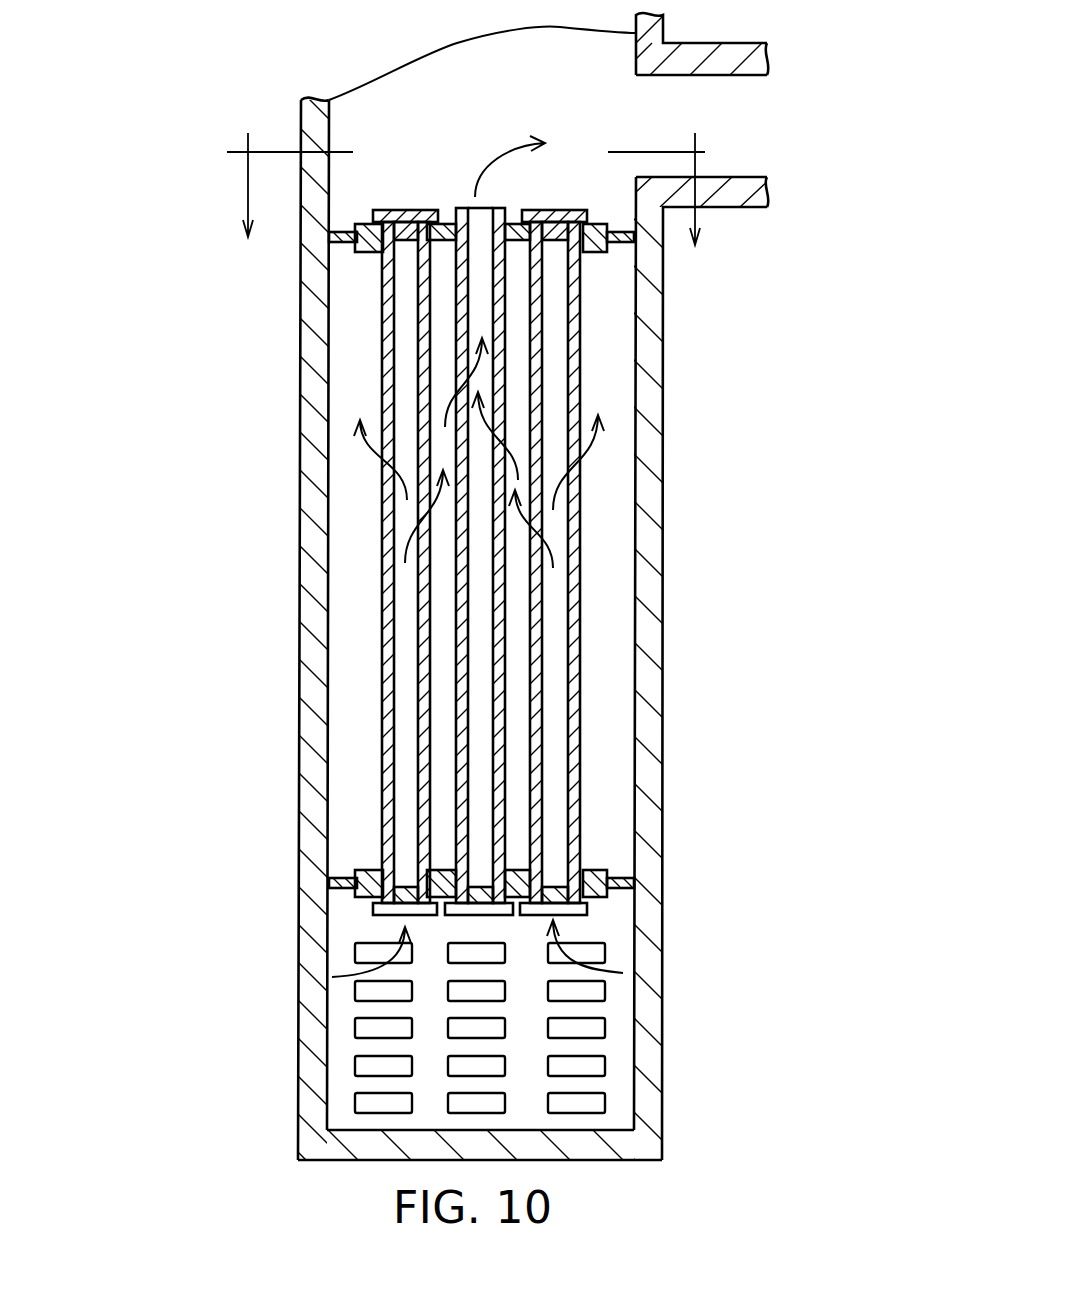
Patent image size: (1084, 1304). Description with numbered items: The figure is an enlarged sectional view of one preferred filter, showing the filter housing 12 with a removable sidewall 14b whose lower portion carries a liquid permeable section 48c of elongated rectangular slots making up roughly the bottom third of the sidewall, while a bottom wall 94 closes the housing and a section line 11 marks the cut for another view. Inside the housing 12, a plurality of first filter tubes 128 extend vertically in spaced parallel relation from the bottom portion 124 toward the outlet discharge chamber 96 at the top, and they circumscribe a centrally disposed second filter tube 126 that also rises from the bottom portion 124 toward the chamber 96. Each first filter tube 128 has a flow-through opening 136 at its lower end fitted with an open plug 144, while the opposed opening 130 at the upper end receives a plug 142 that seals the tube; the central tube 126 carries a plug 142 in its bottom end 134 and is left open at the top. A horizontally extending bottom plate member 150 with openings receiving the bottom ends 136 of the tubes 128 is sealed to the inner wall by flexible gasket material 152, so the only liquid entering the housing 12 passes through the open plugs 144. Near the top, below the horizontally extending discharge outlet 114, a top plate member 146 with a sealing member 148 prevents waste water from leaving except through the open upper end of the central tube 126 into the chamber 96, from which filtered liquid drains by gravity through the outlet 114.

The outlet discharge chamber 96 is at (487, 122).
The discharge outlet 114 is at (752, 100).
The section line 11- 11 is at (468, 179).
The sealing member 148 is at (342, 233).
The plug 142 is at (547, 230).
The top plate member 146 is at (363, 257).
The opposed opening 130 is at (560, 250).
The filter housing 12 is at (662, 430).
The removable sidewall 14b is at (298, 702).
The first filter tubes 128 is at (383, 587).
The second filter tube 126 is at (505, 685).
The bottom end 134 is at (478, 870).
The flow-through opening 136 is at (557, 872).
The flexible gasket material 152 is at (342, 880).
The bottom plate member 150 is at (600, 885).
The bottom portion 124 is at (610, 922).
The open plug 144 is at (373, 912).
The liquid permeable section 48c is at (600, 1065).
The bottom wall 94 is at (330, 1148).